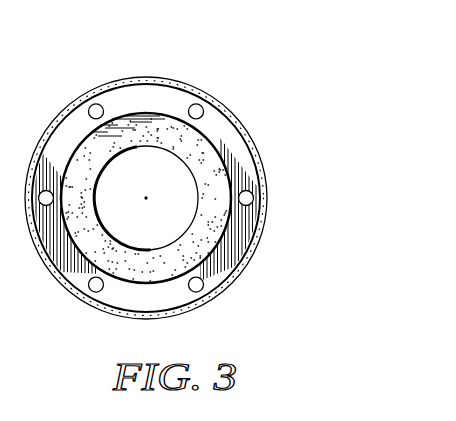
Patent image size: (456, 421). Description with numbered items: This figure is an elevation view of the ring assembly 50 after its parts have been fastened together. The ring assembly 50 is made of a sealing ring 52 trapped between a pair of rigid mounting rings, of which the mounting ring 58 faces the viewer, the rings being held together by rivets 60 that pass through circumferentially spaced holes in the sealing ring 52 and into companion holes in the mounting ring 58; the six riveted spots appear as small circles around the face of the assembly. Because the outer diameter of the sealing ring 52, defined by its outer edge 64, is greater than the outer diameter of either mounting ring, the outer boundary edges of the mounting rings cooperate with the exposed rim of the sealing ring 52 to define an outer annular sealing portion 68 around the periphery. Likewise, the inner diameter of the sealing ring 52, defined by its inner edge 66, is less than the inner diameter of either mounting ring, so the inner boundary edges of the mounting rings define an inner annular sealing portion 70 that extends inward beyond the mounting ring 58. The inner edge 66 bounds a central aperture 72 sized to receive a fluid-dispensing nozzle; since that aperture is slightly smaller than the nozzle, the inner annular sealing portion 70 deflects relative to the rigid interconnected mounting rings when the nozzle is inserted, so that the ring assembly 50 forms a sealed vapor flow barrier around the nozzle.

The ring assembly 50 is at (218, 80).
The sealing ring 52 is at (260, 153).
The mounting ring 58 is at (233, 234).
The rivets 60 is at (199, 287).
The outer edge 64 is at (63, 283).
The inner edge 66 is at (145, 253).
The outer annular sealing portion 68 is at (45, 132).
The inner annular sealing portion 70 is at (88, 218).
The central aperture 72 is at (170, 186).